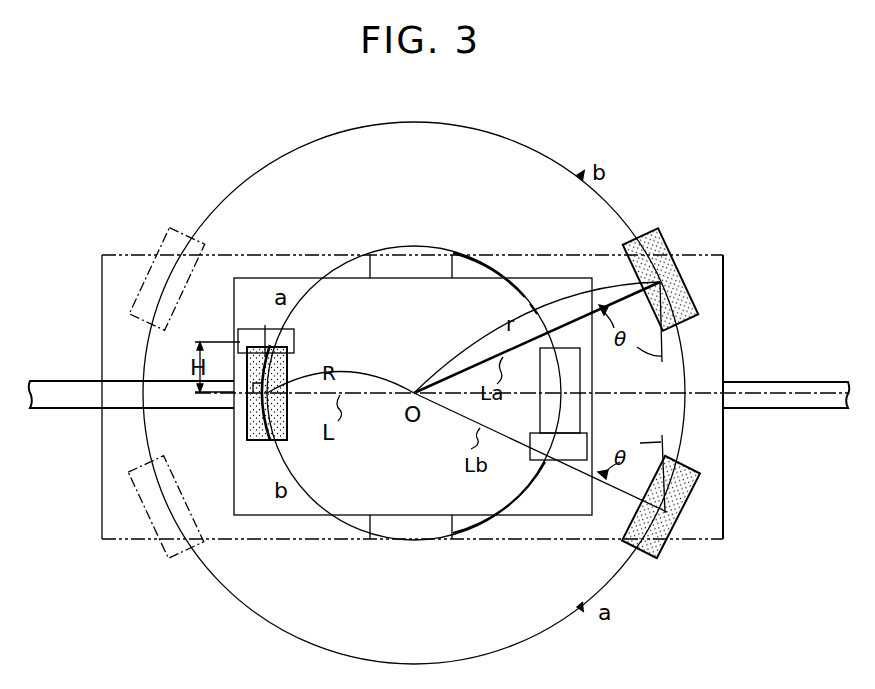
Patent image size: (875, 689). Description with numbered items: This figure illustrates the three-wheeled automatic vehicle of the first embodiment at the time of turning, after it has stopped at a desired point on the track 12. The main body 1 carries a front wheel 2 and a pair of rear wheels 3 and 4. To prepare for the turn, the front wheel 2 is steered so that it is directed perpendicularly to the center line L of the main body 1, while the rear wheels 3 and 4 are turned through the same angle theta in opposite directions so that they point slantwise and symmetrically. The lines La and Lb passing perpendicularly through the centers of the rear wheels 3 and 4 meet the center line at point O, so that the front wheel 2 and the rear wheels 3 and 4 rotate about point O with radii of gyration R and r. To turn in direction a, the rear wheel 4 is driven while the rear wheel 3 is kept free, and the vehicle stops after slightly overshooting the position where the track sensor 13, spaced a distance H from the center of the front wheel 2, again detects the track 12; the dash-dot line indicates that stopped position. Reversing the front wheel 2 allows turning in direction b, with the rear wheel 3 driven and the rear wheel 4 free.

The main body 1 is at (488, 251).
The front wheel 2 is at (247, 428).
The rear wheel 3 is at (662, 246).
The rear wheel 4 is at (663, 553).
The track 12 is at (816, 393).
The track sensor 13 is at (249, 328).